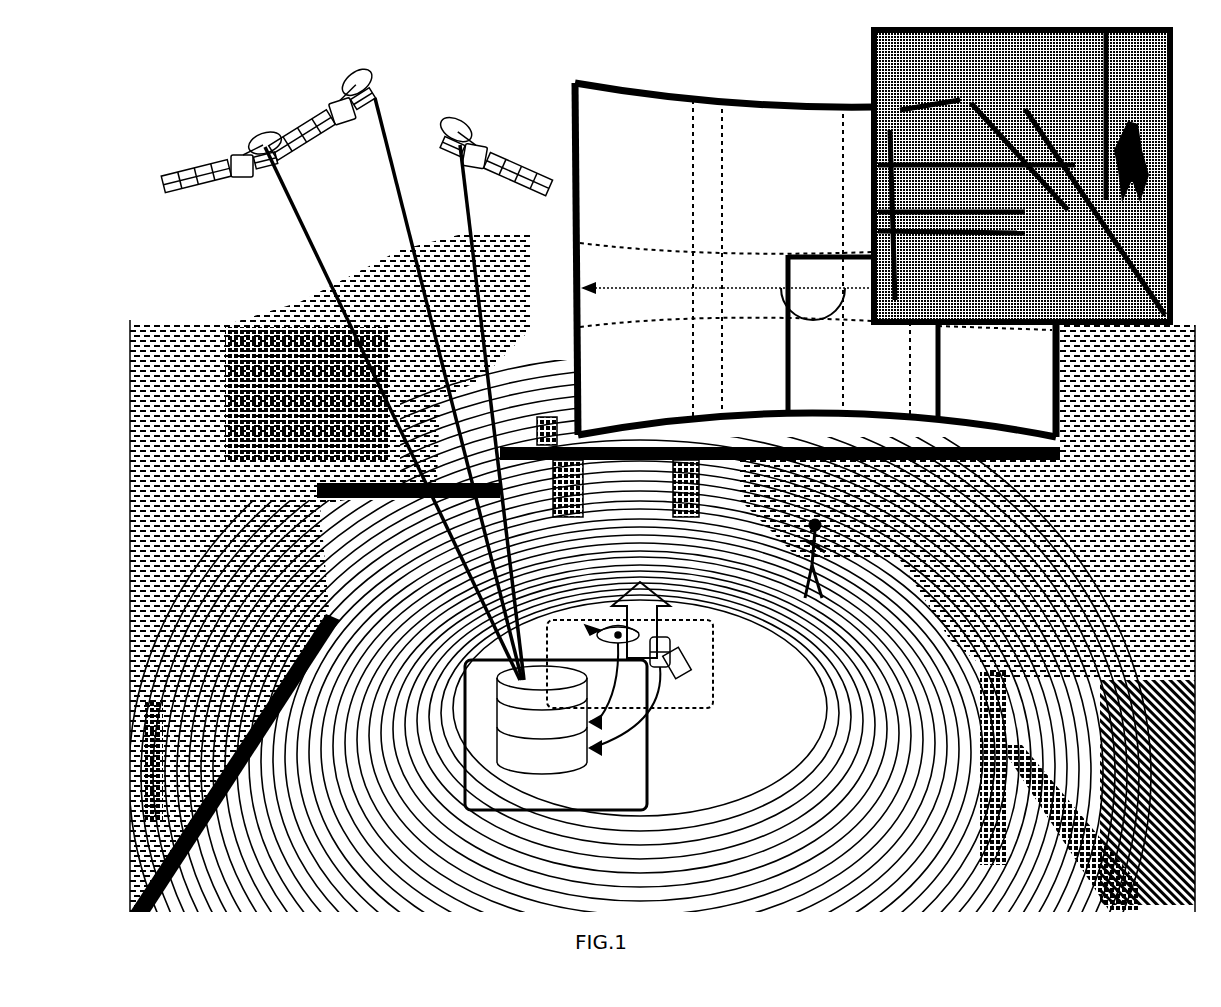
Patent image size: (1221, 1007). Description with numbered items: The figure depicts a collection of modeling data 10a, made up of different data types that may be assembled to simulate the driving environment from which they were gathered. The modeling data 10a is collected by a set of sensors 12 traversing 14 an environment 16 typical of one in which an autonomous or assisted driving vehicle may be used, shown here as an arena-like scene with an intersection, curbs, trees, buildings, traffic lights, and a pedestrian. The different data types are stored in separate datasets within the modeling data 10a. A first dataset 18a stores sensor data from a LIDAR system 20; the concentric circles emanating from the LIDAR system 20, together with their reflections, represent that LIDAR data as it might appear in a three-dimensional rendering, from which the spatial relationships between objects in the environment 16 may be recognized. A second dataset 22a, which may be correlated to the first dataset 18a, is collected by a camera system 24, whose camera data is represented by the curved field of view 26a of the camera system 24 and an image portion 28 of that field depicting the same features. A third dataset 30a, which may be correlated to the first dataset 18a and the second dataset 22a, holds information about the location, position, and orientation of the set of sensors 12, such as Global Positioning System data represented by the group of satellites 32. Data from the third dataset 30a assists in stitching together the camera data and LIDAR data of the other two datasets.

The modeling data 10a is at (556, 735).
The set of sensors 12 is at (722, 711).
The traversing 14 is at (641, 620).
The environment 16 is at (222, 262).
The first dataset 18a is at (542, 754).
The LIDAR system 20 is at (686, 676).
The second dataset 22a is at (542, 725).
The camera system 24 is at (596, 640).
The field of view 26a is at (815, 260).
The image portion 28 is at (877, 334).
The third dataset 30a is at (542, 689).
The group of satellites 32 is at (250, 98).